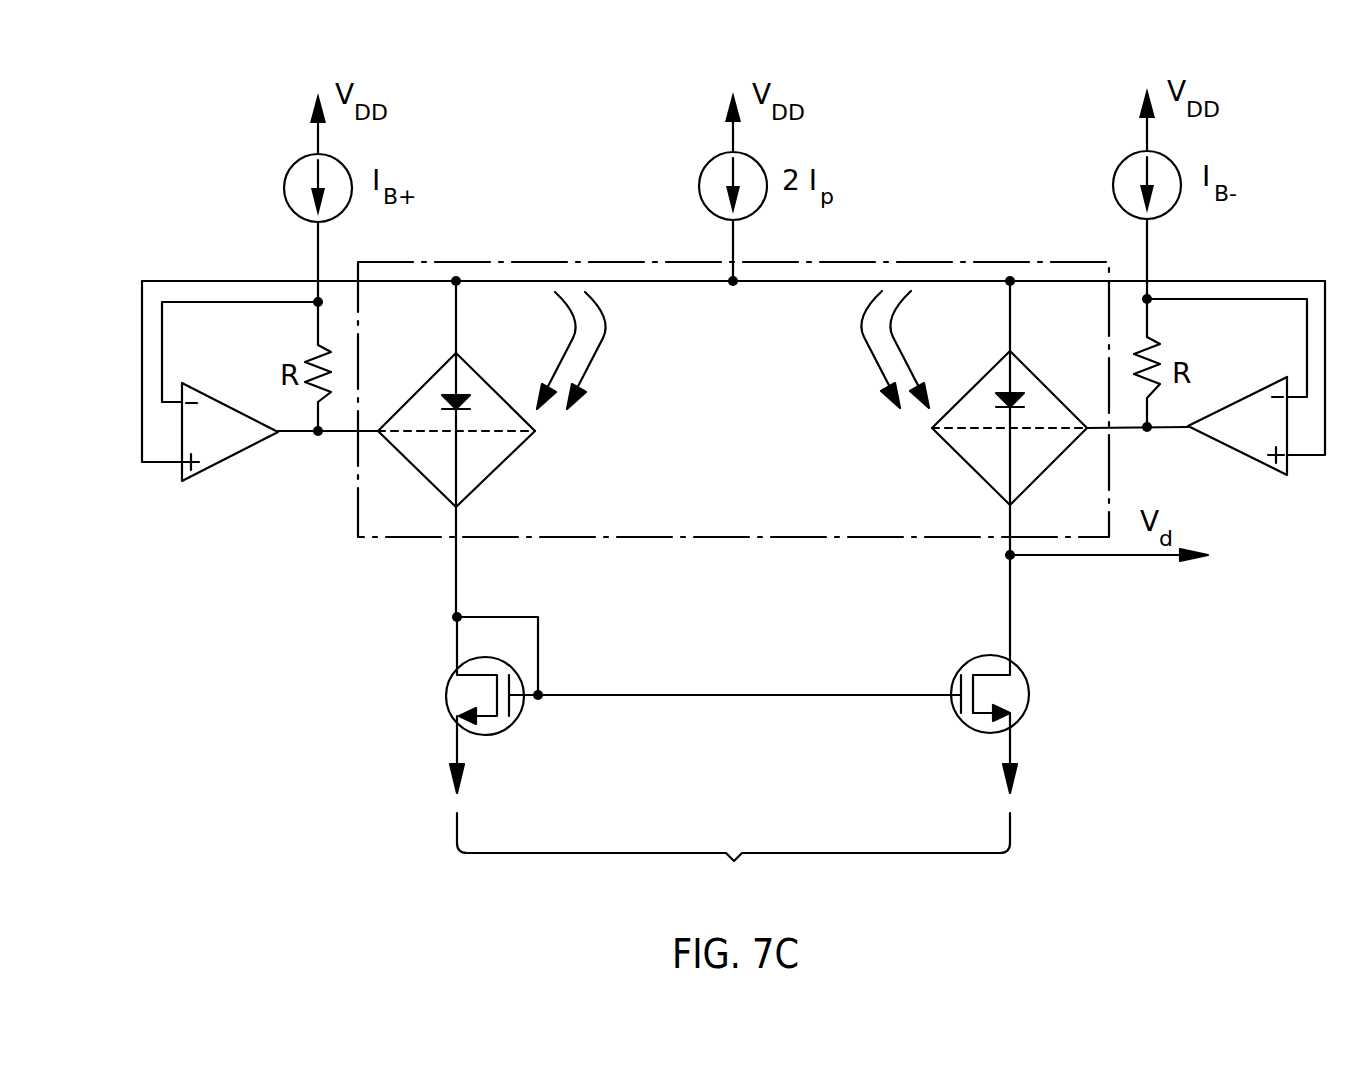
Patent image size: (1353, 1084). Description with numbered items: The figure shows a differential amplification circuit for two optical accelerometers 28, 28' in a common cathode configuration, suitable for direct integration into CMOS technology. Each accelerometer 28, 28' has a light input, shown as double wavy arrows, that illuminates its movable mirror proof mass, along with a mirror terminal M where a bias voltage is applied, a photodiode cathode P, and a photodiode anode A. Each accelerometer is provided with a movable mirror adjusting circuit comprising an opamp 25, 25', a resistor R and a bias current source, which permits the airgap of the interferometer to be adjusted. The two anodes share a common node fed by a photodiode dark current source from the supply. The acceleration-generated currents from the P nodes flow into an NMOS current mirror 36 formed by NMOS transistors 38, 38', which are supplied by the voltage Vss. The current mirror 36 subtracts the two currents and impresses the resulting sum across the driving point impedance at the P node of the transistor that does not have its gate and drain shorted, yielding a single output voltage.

The opamp 25 is at (280, 471).
The opamp 25' is at (1187, 399).
The optical accelerometer 28 is at (515, 446).
The optical accelerometer 28' is at (950, 466).
The NMOS current mirror 36 is at (733, 857).
The NMOS transistor 38 is at (444, 704).
The NMOS transistor 38' is at (834, 729).